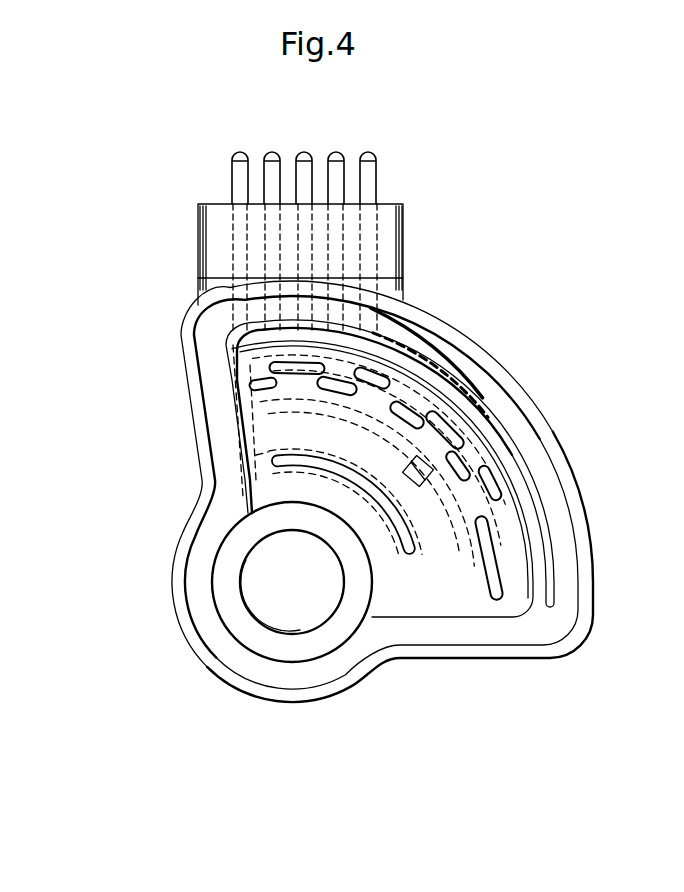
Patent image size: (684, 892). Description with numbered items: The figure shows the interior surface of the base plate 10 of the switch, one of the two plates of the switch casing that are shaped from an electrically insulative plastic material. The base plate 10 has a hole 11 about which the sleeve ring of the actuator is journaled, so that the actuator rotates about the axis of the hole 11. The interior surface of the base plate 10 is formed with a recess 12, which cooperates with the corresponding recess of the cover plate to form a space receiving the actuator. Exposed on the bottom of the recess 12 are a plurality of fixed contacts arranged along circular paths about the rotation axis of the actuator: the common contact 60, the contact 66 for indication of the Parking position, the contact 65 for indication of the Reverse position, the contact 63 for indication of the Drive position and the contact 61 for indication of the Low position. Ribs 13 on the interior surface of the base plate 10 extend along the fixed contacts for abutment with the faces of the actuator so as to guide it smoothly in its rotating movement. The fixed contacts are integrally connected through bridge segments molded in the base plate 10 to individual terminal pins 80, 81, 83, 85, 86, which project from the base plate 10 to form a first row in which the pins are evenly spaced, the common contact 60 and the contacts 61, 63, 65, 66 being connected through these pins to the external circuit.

The base plate 10 is at (184, 336).
The hole 11 is at (262, 612).
The recess 12 is at (413, 600).
The ribs 13 is at (318, 389).
The common contact 60 is at (308, 463).
The contact for Low position 61 is at (318, 366).
The contact for Drive position 63 is at (391, 386).
The contact for Reverse position 65 is at (458, 432).
The contact for Parking position 66 is at (498, 500).
The terminal pin 80 is at (237, 167).
The terminal pin 81 is at (303, 160).
The terminal pin 83 is at (272, 158).
The terminal pin 85 is at (337, 160).
The terminal pin 86 is at (370, 162).